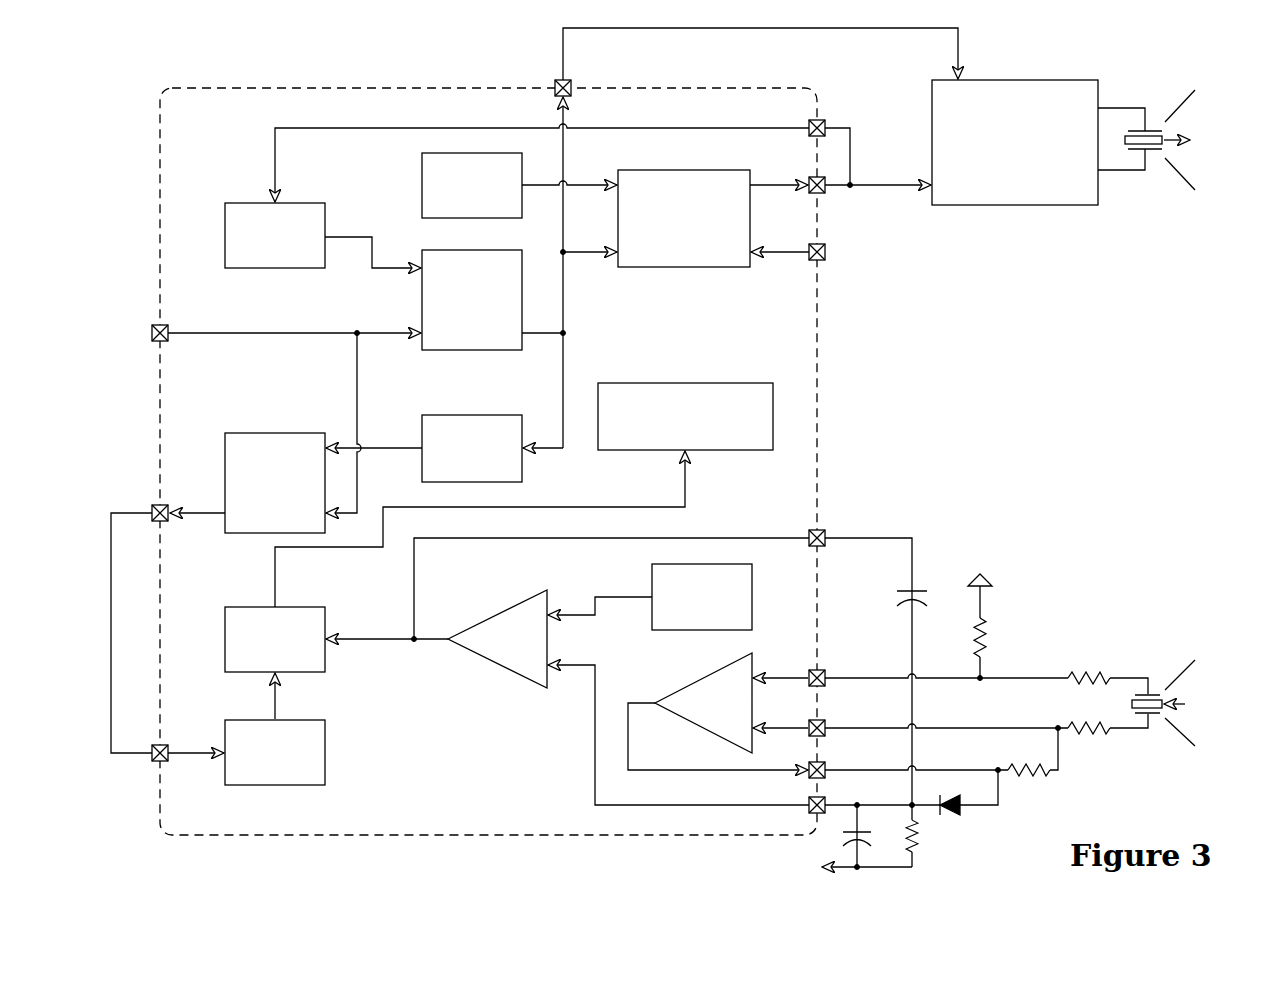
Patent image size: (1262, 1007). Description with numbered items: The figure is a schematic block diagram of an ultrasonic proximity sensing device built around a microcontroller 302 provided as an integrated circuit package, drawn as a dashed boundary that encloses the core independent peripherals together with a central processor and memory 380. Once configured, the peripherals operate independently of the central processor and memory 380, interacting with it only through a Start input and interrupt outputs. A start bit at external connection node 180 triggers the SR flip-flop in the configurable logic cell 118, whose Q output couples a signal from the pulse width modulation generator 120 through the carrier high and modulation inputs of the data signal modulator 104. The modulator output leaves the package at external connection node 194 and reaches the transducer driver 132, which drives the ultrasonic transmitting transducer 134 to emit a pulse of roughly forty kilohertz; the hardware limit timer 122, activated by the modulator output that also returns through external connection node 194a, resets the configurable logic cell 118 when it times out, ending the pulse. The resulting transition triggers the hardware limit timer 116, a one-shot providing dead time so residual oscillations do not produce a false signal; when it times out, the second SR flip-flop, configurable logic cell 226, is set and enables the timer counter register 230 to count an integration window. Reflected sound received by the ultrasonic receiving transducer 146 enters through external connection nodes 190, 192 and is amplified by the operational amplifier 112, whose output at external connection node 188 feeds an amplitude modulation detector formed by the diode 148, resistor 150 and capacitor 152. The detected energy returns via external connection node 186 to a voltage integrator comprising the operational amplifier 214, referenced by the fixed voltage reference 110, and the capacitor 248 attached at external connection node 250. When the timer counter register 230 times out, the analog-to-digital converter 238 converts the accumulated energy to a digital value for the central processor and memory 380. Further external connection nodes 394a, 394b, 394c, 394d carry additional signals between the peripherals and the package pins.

The data signal modulator 104 is at (718, 170).
The fixed voltage reference 110 is at (753, 600).
The operational amplifier 112 is at (692, 683).
The hardware limit timer 116 is at (482, 415).
The configurable logic cell 118 is at (460, 353).
The pulse width modulation generator 120 is at (420, 177).
The hardware limit timer 122 is at (326, 218).
The transducer driver 132 is at (1065, 80).
The ultrasonic transmitting transducer 134 is at (1192, 140).
The ultrasonic receiving transducer 146 is at (1174, 738).
The diode 148 is at (952, 815).
The resistor 150 is at (918, 845).
The capacitor 152 is at (846, 836).
The external connection node 180 is at (153, 326).
The external connection node 186 is at (825, 800).
The external connection node 188 is at (825, 765).
The external connection node 190 is at (825, 673).
The external connection node 192 is at (825, 723).
The external connection node 194 is at (824, 194).
The external connection node 194a is at (822, 121).
The operational amplifier 214 is at (490, 622).
The configurable logic cell 226 is at (292, 433).
The timer counter register 230 is at (300, 719).
The analog-to-digital converter 238 is at (235, 606).
The capacitor 248 is at (900, 596).
The external connection node 250 is at (824, 532).
The microcontroller 302 is at (820, 402).
The central processor and memory 380 is at (702, 383).
The external connection node 394a is at (824, 260).
The external connection node 394b is at (557, 81).
The external connection node 394c is at (154, 506).
The external connection node 394d is at (153, 762).